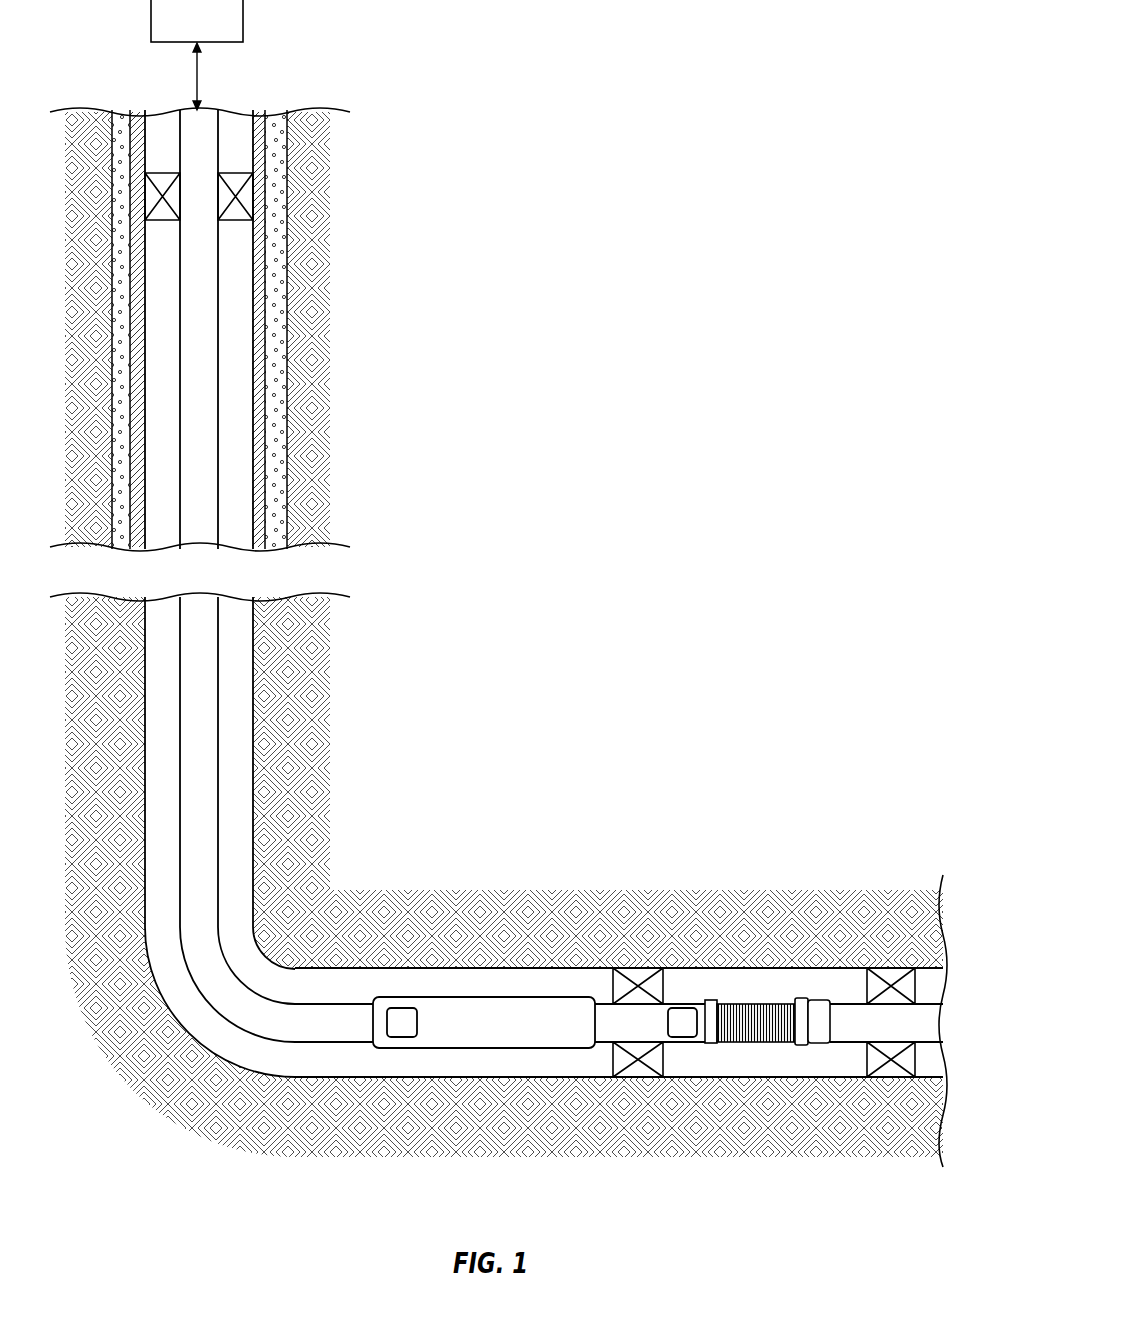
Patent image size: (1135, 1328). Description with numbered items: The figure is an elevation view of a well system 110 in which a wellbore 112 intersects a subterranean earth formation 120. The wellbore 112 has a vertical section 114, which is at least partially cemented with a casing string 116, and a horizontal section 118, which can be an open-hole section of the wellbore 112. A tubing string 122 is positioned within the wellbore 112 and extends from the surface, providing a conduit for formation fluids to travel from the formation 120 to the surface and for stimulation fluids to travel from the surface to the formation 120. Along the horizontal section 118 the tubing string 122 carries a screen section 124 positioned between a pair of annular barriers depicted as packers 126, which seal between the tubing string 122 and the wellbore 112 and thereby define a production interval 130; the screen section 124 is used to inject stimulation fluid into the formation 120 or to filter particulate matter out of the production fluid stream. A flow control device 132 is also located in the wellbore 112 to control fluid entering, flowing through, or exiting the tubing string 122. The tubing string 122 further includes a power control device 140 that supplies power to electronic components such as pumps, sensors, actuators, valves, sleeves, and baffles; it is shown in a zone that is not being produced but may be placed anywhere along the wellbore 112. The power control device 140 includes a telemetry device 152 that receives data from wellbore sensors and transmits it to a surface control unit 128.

The well system 110 is at (492, 300).
The wellbore 112 is at (255, 682).
The vertical section 114 is at (255, 615).
The casing string 116 is at (265, 422).
The horizontal section 118 is at (778, 968).
The subterranean earth formation 120 is at (912, 938).
The tubing string 122 is at (218, 720).
The screen section 124 is at (762, 1043).
The packers 126 is at (638, 975).
The surface control unit 128 is at (218, 23).
The production interval 130 is at (702, 987).
The flow control device 132 is at (683, 1037).
The power control device 140 is at (500, 1048).
The telemetry device 152 is at (400, 1037).